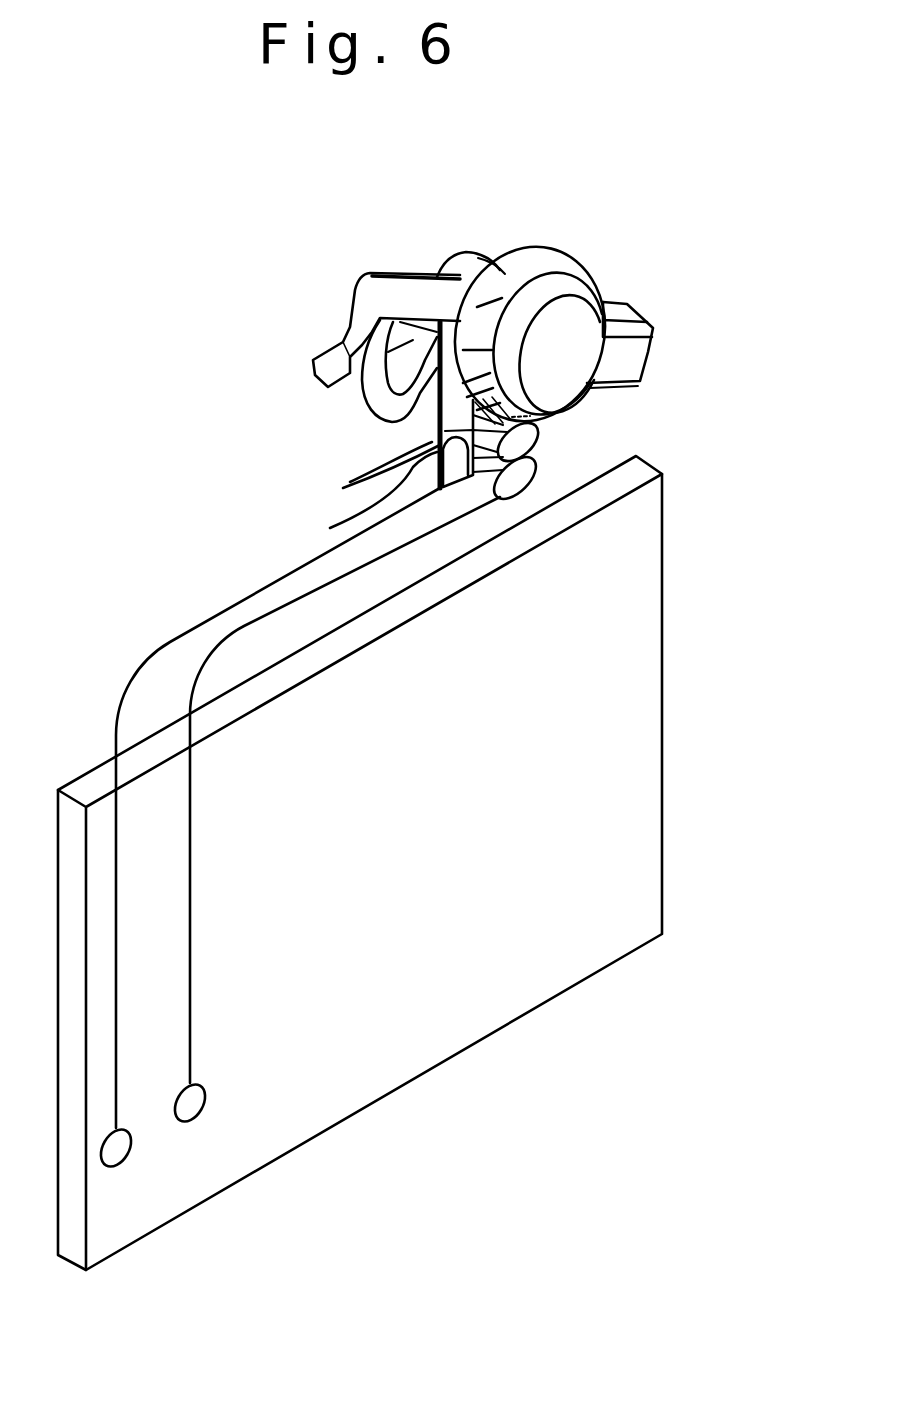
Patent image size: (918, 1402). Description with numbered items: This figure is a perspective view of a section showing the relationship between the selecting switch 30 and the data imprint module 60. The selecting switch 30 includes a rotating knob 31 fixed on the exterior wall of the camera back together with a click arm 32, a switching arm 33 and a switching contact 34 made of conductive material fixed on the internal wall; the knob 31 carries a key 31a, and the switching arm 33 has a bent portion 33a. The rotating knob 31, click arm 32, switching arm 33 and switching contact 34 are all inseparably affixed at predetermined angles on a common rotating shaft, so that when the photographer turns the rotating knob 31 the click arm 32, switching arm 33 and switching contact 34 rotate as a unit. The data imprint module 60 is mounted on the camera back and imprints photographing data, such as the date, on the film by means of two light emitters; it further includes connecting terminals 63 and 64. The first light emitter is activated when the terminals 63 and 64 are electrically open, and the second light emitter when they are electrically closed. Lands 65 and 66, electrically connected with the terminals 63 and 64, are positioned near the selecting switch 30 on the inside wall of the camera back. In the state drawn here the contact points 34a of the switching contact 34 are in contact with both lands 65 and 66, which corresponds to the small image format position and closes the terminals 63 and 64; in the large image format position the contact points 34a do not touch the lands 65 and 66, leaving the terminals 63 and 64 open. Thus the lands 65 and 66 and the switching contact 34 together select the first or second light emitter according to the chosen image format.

The selecting switch 30 is at (573, 188).
The rotating knob 31 is at (575, 280).
The key of lamp bulb 31a is at (638, 353).
The click arm 32 is at (403, 290).
The switching arm 33 is at (360, 395).
The terminal leg 33a is at (437, 430).
The switching contact 34 is at (330, 528).
The contact points 34a is at (346, 488).
The data imprint module 60 is at (642, 779).
The connecting terminal 63 is at (113, 1157).
The connecting terminal 64 is at (188, 1108).
The land 65 is at (545, 420).
The land 66 is at (557, 444).